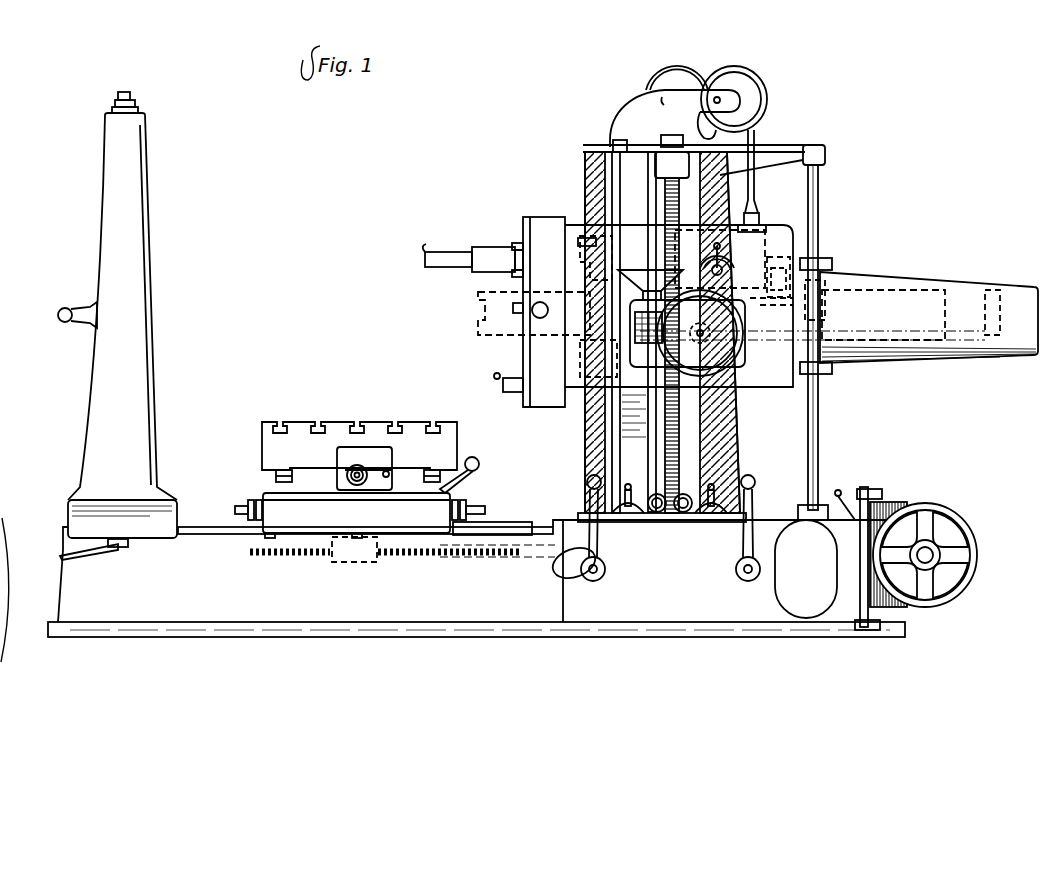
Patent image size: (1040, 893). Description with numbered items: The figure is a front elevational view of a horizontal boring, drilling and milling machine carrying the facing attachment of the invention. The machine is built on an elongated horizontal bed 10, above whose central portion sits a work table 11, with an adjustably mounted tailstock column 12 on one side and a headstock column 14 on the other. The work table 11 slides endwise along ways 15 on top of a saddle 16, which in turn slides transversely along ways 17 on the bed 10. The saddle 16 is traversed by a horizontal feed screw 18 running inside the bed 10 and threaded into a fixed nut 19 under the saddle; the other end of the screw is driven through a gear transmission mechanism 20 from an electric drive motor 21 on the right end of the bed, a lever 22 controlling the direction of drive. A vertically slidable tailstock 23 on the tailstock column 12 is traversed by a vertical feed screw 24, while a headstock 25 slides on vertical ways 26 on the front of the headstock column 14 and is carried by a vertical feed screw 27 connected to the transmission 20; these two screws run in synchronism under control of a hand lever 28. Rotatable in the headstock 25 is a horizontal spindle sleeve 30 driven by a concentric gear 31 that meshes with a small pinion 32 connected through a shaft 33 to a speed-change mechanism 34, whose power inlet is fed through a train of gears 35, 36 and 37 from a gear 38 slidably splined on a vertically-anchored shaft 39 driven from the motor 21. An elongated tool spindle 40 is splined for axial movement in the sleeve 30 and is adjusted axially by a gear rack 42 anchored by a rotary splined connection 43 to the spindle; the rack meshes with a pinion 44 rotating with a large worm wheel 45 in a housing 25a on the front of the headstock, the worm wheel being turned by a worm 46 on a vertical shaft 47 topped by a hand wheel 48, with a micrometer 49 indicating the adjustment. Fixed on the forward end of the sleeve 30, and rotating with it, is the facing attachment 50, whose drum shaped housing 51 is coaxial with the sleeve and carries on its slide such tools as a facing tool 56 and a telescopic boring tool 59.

The bed 10 is at (320, 622).
The work table 11 is at (347, 421).
The tailstock column 12 is at (140, 270).
The headstock column 14 is at (682, 376).
The ways 15 is at (320, 468).
The saddle 16 is at (275, 497).
The ways 17 is at (228, 527).
The horizontal feed screw 18 is at (503, 556).
The fixed nut 19 is at (355, 560).
The gear transmission mechanism 20 is at (728, 554).
The electric drive motor 21 is at (958, 514).
The lever 22 is at (630, 508).
The tailstock 23 is at (86, 310).
The vertical feed screw 24 is at (118, 96).
The headstock 25 is at (575, 222).
The housing 25a is at (726, 297).
The vertical ways 26 is at (593, 166).
The vertical feed screw 27 is at (665, 466).
The hand lever 28 is at (710, 508).
The sleeve 30 is at (612, 350).
The concentric gear 31 is at (565, 380).
The small pinion 32 is at (565, 236).
The shaft 33 is at (610, 251).
The speed-change mechanism 34 is at (762, 228).
The gear 35 is at (781, 264).
The gear 36 is at (769, 310).
The gear 37 is at (795, 305).
The gear 38 is at (826, 303).
The vertically-anchored shaft 39 is at (818, 232).
The tool spindle 40 is at (497, 335).
The gear rack 42 is at (738, 344).
The rotary splined connection 43 is at (990, 316).
The pinion 44 is at (708, 330).
The worm wheel 45 is at (722, 362).
The worm 46 is at (635, 322).
The vertical shaft 47 is at (660, 230).
The hand wheel 48 is at (704, 254).
The micrometer 49 is at (641, 291).
The facing attachment 50 is at (722, 332).
The housing 51 is at (540, 396).
The facing tool 56 is at (494, 375).
The telescopic boring tool 59 is at (443, 275).